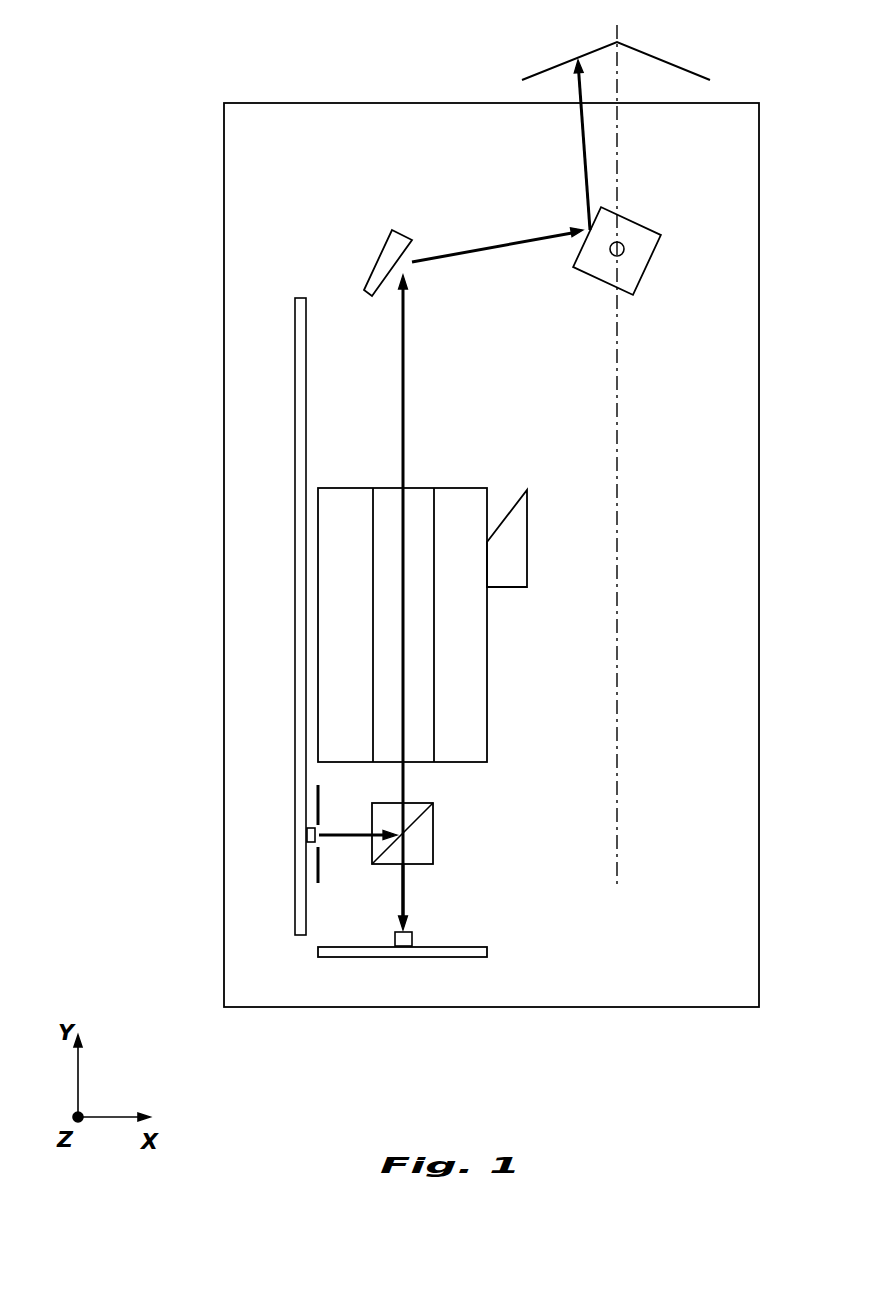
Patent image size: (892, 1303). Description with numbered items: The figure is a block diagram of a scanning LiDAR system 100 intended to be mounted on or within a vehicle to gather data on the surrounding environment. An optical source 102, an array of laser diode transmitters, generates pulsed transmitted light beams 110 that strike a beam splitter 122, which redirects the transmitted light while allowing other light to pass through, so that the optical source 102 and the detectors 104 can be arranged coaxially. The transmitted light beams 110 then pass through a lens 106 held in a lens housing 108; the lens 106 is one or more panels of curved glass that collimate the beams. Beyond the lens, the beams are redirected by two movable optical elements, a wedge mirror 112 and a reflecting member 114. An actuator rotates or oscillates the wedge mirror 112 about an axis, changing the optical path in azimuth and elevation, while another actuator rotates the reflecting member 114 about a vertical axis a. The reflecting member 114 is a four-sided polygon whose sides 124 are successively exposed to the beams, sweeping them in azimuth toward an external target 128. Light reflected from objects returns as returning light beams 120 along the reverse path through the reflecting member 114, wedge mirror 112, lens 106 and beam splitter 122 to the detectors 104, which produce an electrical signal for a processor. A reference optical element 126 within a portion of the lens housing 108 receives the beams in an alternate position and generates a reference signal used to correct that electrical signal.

The scanning LiDAR system 100 is at (172, 138).
The optical source 102 is at (307, 835).
The detectors 104 is at (412, 940).
The lens 106 is at (372, 596).
The lens housing 108 is at (318, 688).
The transmitted light beam 110 is at (483, 247).
The wedge mirror 112 is at (378, 258).
The reflecting member 114 is at (661, 245).
The returning light beams 120 is at (403, 895).
The beam splitter 122 is at (433, 830).
The sides 124 is at (587, 213).
The reference optical element 126 is at (528, 546).
The target surface 128 is at (535, 72).
The axis a is at (625, 249).